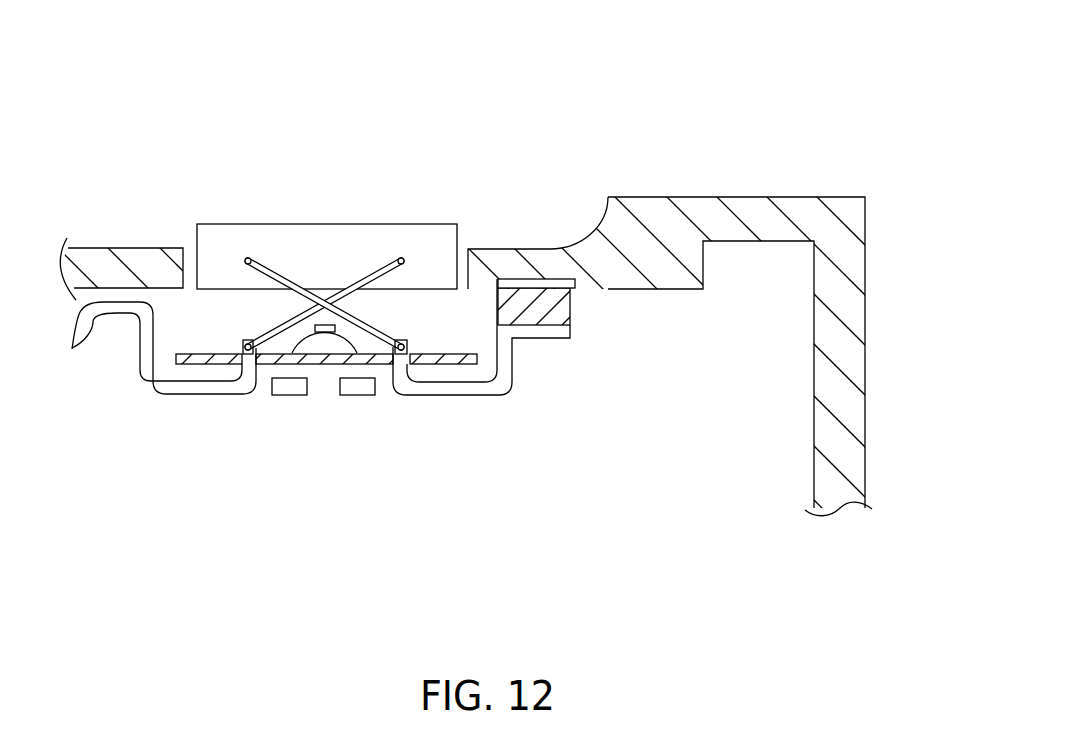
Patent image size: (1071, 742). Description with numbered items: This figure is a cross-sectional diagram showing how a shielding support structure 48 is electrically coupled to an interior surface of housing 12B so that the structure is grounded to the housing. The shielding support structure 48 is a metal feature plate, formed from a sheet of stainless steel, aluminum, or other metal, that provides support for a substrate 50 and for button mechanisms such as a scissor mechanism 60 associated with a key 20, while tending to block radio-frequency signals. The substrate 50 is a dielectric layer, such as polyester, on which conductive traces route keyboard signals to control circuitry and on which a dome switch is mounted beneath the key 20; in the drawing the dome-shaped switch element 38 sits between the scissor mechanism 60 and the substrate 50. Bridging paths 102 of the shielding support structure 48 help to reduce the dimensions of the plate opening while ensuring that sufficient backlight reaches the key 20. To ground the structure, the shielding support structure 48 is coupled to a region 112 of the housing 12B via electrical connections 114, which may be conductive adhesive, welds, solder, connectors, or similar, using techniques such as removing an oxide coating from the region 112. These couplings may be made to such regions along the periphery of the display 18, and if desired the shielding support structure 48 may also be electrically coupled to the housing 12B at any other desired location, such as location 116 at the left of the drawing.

The display 18 is at (664, 55).
The housing 12B is at (132, 257).
The region 112 is at (544, 256).
The key 20 is at (365, 232).
The electrical connections 114 is at (560, 306).
The shielding support structure 48 is at (150, 374).
The substrate 50 is at (210, 353).
The dome switch 38 is at (356, 330).
The scissor mechanism 60 is at (263, 267).
The bridging paths 102 is at (357, 390).
The location 116 is at (85, 295).